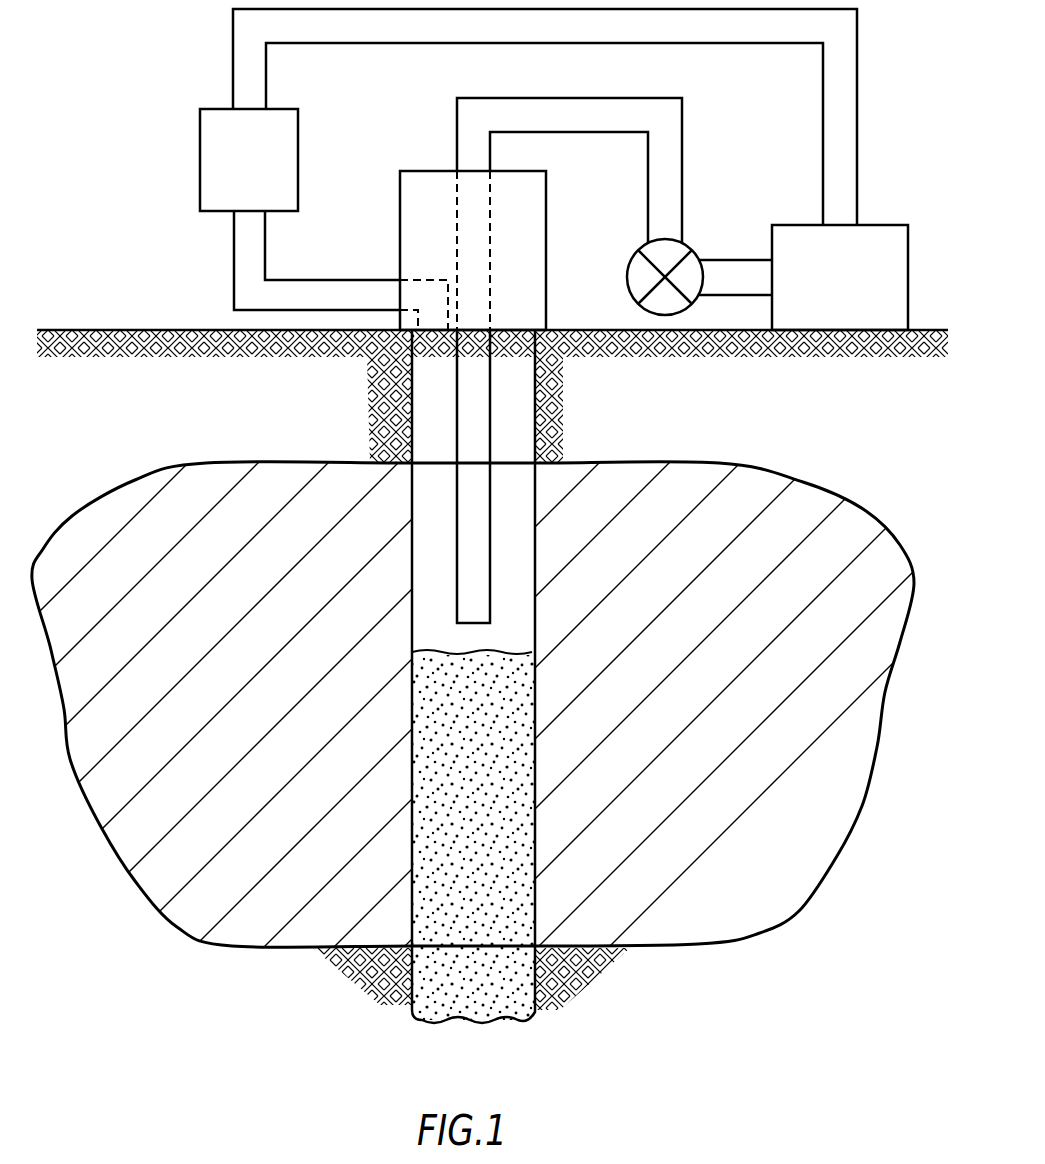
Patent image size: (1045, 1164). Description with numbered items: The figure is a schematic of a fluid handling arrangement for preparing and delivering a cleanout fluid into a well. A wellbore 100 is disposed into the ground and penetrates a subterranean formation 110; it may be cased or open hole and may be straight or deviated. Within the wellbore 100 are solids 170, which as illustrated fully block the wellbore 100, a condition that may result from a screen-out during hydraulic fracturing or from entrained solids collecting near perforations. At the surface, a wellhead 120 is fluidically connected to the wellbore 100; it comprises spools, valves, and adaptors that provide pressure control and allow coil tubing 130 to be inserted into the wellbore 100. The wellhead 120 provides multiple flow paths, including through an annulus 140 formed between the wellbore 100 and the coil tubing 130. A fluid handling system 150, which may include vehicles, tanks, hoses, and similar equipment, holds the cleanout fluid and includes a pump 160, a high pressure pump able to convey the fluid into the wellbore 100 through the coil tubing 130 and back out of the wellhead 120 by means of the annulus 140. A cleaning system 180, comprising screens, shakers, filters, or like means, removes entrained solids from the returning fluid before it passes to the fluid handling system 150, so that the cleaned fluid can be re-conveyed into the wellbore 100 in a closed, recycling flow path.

The wellbore 100 is at (536, 543).
The subterranean formation 110 is at (824, 866).
The wellhead 120 is at (398, 211).
The coil tubing 130 is at (492, 396).
The annulus 140 is at (430, 407).
The fluid handling system 150 is at (880, 225).
The pump 160 is at (690, 240).
The solids 170 is at (512, 997).
The cleaning system 180 is at (200, 130).